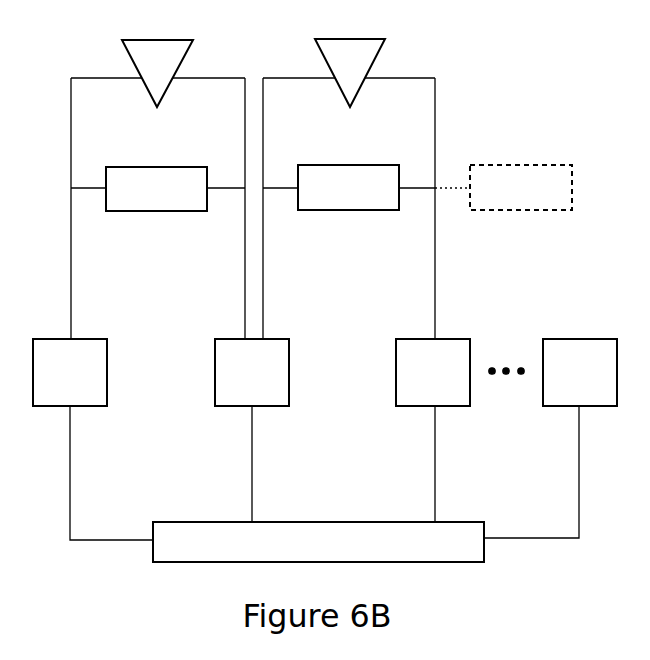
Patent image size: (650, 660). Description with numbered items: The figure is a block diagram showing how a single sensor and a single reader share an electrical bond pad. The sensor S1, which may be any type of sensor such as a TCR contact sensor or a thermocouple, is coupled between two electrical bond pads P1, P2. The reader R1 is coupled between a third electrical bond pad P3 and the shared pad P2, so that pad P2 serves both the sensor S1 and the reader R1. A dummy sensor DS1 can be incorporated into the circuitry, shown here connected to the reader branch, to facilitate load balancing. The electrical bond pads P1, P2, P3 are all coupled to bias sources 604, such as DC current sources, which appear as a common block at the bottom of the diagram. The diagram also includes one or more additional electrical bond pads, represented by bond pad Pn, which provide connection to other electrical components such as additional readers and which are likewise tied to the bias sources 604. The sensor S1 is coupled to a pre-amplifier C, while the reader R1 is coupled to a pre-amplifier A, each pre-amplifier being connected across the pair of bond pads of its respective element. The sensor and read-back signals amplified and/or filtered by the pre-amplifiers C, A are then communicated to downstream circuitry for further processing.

The bias sources 604 is at (352, 521).
The sensor S1 is at (156, 189).
The reader R1 is at (348, 187).
The dummy sensor DS1 is at (521, 187).
The electrical bond pad P1 is at (70, 372).
The shared electrical bond pad P2 is at (252, 372).
The electrical bond pad P3 is at (433, 372).
The additional electrical bond pad Pn is at (580, 372).
The pre-amplifier C is at (157, 73).
The pre-amplifier A is at (350, 73).